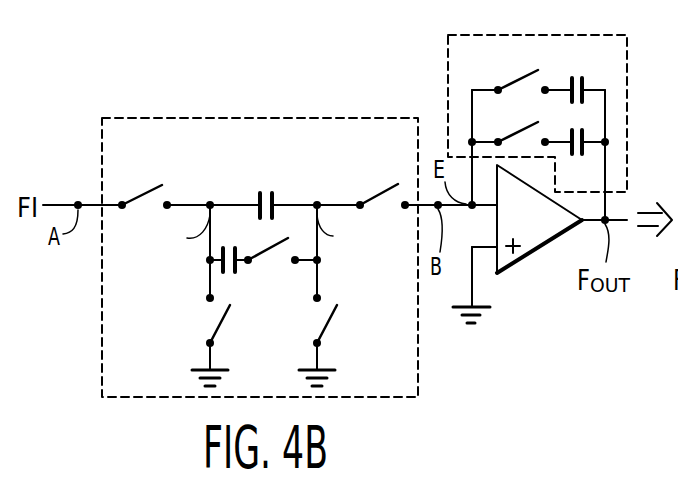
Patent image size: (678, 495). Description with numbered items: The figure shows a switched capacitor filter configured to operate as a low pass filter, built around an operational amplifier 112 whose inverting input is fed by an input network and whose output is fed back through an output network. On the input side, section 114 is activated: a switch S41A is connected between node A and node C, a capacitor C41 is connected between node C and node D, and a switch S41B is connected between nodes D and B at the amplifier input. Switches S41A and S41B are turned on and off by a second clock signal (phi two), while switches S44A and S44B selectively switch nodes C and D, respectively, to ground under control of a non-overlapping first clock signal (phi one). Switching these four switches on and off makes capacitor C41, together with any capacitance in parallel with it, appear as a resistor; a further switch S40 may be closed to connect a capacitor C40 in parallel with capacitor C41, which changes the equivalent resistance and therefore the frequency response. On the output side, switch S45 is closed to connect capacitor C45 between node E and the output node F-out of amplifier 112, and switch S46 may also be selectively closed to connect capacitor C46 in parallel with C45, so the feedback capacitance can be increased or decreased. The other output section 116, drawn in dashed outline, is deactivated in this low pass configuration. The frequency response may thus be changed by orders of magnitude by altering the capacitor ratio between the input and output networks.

The operational amplifier 112 is at (533, 250).
The input section 114 is at (117, 114).
The output section 116 is at (627, 70).
The switch S41A is at (124, 140).
The switch S41B is at (353, 141).
The switch S40 is at (280, 263).
The switch S44A is at (174, 300).
The switch S44B is at (349, 300).
The switch S45 is at (510, 72).
The switch S46 is at (510, 126).
The capacitor C40 is at (229, 246).
The capacitor C41 is at (263, 192).
The capacitor C45 is at (575, 76).
The capacitor C46 is at (575, 158).